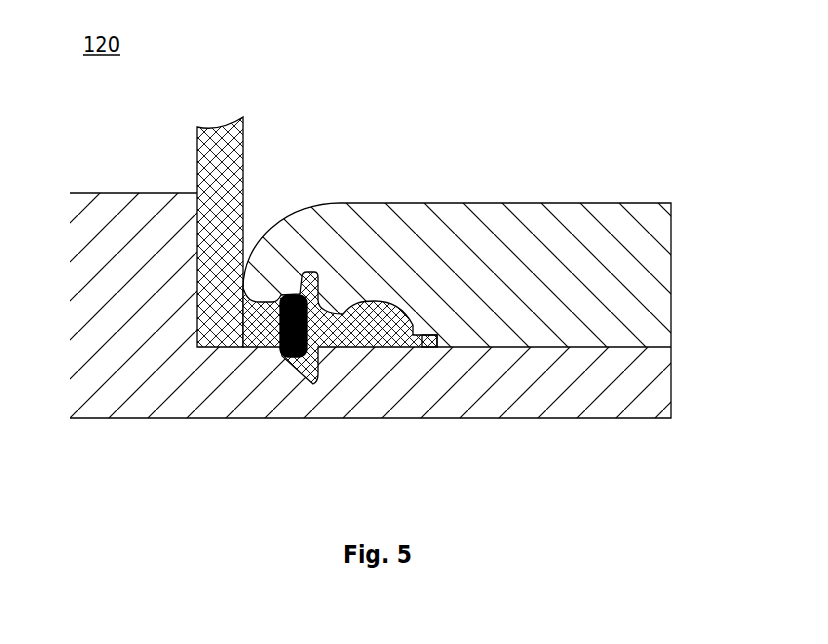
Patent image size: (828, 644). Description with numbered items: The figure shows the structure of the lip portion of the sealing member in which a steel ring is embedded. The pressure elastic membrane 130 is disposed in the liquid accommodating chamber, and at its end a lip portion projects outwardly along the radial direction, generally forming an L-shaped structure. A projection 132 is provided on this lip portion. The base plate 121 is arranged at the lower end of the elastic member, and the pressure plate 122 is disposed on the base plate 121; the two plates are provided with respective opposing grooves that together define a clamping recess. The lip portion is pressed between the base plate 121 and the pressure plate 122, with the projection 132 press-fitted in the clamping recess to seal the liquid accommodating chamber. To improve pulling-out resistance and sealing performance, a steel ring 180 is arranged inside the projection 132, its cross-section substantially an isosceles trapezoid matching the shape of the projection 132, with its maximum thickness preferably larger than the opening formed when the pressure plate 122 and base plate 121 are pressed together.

The base plate 121 is at (160, 388).
The pressure plate 122 is at (483, 285).
The pressure elastic membrane 130 is at (212, 172).
The projection 132 is at (302, 285).
The steel ring 180 is at (279, 357).